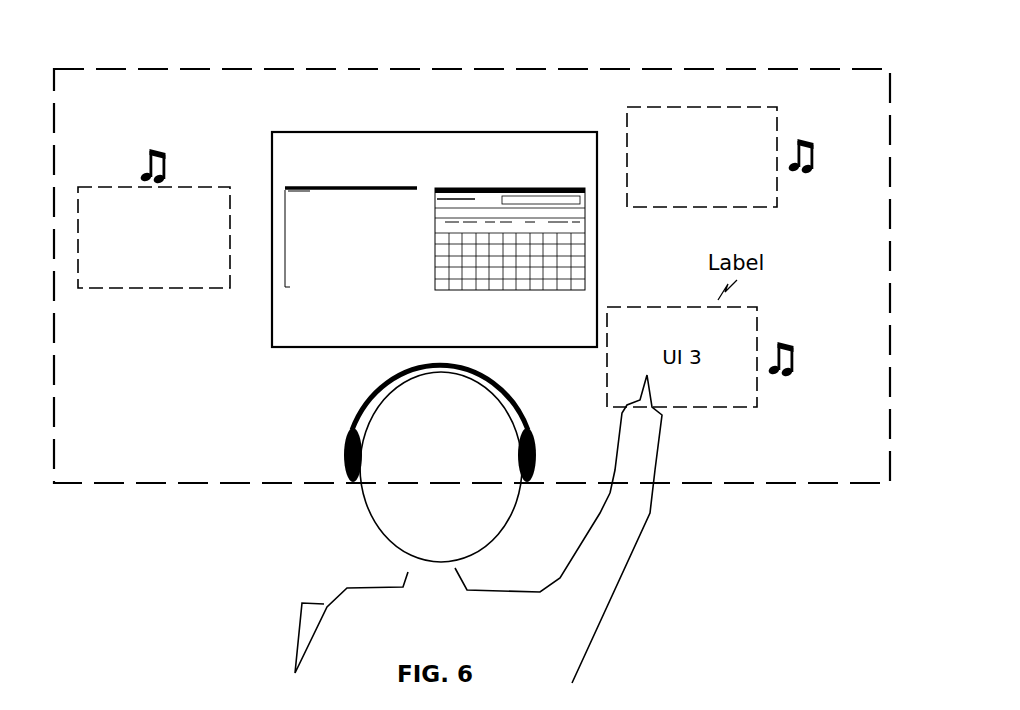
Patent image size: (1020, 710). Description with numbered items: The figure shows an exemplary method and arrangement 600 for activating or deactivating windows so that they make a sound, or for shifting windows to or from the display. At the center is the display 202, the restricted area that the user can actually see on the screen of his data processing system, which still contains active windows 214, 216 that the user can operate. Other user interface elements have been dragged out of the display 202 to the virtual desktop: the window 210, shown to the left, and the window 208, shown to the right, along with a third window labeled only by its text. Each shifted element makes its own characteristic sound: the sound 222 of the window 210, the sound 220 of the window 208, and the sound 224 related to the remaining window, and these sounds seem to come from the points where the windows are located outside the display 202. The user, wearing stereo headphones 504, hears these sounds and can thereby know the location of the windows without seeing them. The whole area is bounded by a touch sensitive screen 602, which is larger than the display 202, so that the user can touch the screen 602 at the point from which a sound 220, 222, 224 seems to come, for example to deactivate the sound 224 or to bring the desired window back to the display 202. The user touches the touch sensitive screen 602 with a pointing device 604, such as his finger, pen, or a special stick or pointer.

The display 202 is at (410, 218).
The window 208 is at (702, 184).
The window 210 is at (154, 272).
The window 214 is at (351, 263).
The window 216 is at (506, 263).
The sound 220 is at (823, 175).
The sound 222 is at (124, 149).
The sound 224 is at (806, 377).
The stereo headphones 504 is at (408, 423).
The method and arrangement 600 is at (717, 520).
The touch sensitive screen 602 is at (472, 313).
The pointing device 604 is at (658, 529).